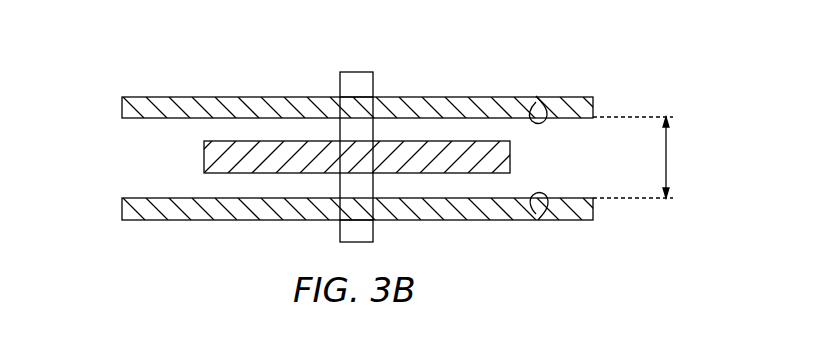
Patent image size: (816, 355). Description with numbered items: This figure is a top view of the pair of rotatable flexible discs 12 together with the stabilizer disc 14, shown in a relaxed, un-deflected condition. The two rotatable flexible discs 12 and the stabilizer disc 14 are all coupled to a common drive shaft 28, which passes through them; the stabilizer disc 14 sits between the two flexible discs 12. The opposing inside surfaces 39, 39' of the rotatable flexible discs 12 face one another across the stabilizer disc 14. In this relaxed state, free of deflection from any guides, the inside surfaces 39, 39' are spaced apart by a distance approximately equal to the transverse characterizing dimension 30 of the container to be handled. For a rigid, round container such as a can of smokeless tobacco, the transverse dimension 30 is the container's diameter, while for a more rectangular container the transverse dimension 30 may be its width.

The rotatable flexible disc 12 is at (122, 106).
The stabilizer disc 14 is at (421, 141).
The common drive shaft 28 is at (358, 72).
The transverse characterizing dimension 30 is at (668, 158).
The inside surface 39 is at (531, 231).
The inside surface 39' is at (529, 86).